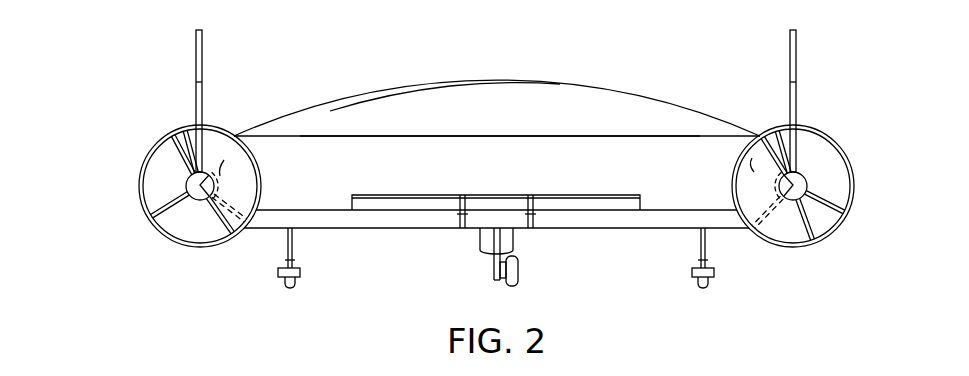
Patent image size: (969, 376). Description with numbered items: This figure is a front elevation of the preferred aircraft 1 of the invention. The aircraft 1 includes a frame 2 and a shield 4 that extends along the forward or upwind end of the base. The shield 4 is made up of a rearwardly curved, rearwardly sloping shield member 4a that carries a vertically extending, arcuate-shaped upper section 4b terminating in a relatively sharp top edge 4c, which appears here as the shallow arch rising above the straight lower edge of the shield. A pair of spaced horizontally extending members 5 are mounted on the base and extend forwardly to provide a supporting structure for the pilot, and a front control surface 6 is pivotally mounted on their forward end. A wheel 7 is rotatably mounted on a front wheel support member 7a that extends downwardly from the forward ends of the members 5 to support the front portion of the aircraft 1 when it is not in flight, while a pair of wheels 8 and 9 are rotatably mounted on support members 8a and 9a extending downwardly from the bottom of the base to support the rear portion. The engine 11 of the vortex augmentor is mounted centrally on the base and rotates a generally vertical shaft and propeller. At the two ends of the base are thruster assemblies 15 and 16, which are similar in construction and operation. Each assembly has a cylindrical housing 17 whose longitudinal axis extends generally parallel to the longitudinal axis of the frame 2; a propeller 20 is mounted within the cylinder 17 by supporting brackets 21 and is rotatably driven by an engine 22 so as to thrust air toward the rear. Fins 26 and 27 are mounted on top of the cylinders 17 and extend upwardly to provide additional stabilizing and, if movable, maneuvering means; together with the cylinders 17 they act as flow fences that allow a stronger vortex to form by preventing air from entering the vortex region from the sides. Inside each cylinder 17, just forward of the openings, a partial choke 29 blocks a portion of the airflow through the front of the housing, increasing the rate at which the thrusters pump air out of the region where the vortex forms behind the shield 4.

The aircraft 1 is at (150, 110).
The frame 2 is at (427, 236).
The shield 4 is at (588, 84).
The shield member 4a is at (520, 182).
The upper section 4b is at (393, 115).
The top edge 4c is at (502, 80).
The horizontally extending members 5 is at (461, 230).
The front control surface 6 is at (603, 196).
The wheel 7 is at (518, 280).
The front wheel support member 7a is at (493, 256).
The wheel 8 is at (709, 283).
The support member 8a is at (700, 248).
The wheel 9 is at (283, 283).
The support member 9a is at (297, 240).
The engine 11 is at (515, 242).
The thruster assembly 15 is at (851, 148).
The thruster assembly 16 is at (139, 162).
The cylindrical housing 17 is at (175, 247).
The propeller 20 is at (177, 140).
The supporting brackets 21 is at (174, 226).
The engine 22 is at (190, 189).
The fin 26 is at (797, 48).
The fin 27 is at (197, 42).
The partial choke 29 is at (221, 164).